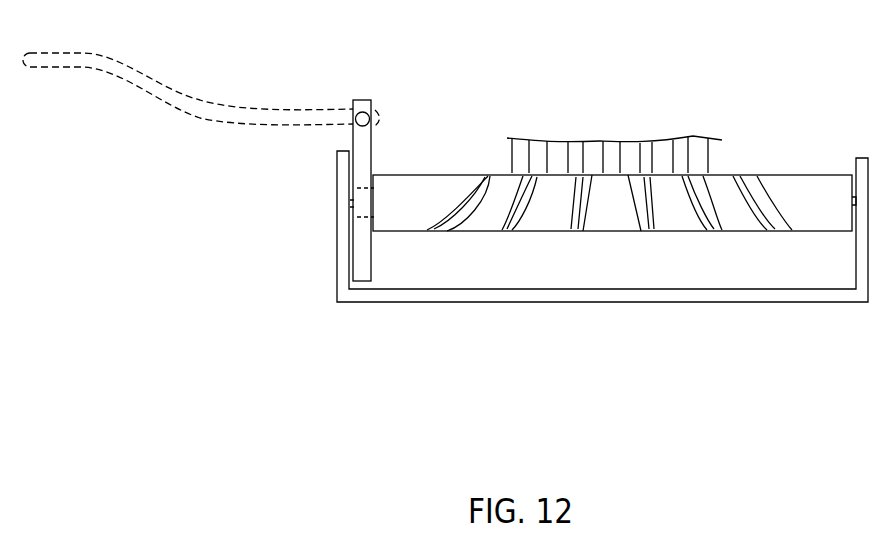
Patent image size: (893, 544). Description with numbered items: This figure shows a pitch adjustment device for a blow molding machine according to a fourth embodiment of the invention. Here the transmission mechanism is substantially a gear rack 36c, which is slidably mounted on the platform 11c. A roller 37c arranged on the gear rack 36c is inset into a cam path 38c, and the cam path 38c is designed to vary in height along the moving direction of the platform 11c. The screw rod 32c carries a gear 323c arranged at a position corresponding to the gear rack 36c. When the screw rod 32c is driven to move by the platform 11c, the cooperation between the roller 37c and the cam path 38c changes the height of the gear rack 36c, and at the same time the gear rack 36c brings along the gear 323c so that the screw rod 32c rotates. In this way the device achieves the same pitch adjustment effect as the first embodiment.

The cam path 38c is at (190, 98).
The roller 37c is at (372, 110).
The gear rack 36c is at (360, 145).
The gear 323c is at (358, 218).
The screw rod 32c is at (613, 210).
The platform 11c is at (687, 295).